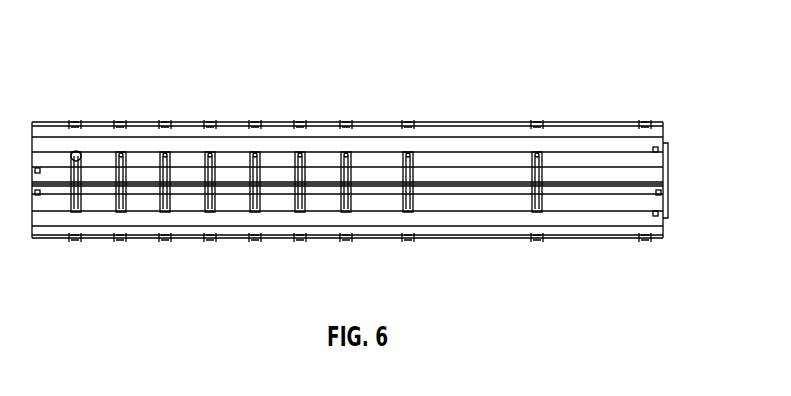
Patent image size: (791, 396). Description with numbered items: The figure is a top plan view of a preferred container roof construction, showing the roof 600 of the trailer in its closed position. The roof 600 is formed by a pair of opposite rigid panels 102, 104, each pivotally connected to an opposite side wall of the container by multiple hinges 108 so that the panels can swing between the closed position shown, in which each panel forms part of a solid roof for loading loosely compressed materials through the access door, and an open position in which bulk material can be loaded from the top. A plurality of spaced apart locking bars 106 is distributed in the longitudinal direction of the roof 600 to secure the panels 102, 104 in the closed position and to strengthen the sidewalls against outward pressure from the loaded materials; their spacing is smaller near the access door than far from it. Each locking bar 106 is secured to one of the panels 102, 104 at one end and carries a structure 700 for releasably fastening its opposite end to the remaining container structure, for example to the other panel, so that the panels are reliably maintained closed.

The roof 600 is at (491, 110).
The rigid panel 102 is at (233, 226).
The rigid panel 104 is at (234, 139).
The locking bar 106 is at (172, 156).
The hinge 108 is at (168, 120).
The structure for releasably fastening 700 is at (120, 151).